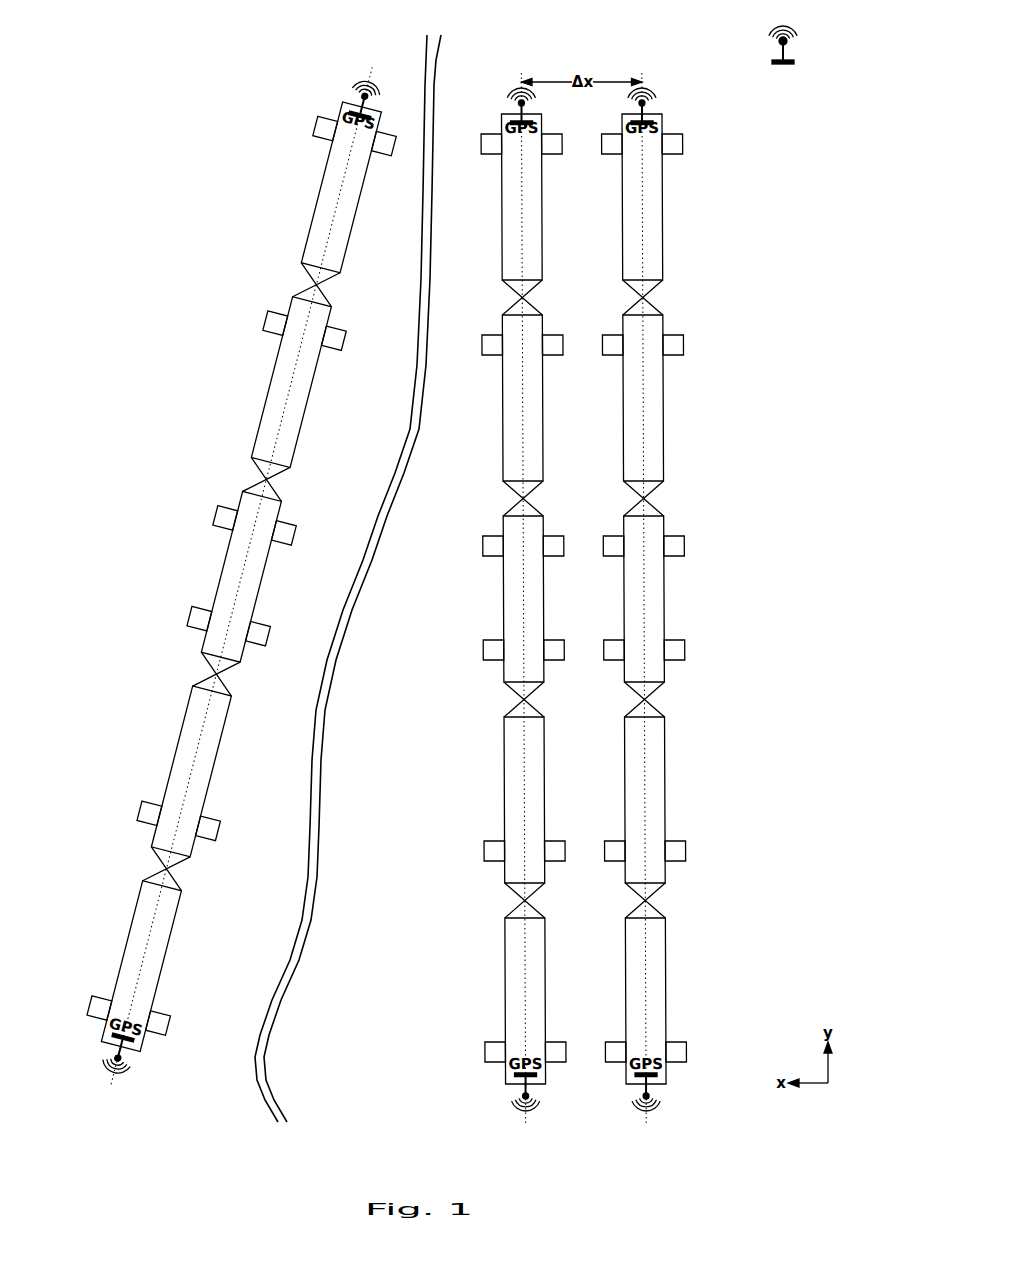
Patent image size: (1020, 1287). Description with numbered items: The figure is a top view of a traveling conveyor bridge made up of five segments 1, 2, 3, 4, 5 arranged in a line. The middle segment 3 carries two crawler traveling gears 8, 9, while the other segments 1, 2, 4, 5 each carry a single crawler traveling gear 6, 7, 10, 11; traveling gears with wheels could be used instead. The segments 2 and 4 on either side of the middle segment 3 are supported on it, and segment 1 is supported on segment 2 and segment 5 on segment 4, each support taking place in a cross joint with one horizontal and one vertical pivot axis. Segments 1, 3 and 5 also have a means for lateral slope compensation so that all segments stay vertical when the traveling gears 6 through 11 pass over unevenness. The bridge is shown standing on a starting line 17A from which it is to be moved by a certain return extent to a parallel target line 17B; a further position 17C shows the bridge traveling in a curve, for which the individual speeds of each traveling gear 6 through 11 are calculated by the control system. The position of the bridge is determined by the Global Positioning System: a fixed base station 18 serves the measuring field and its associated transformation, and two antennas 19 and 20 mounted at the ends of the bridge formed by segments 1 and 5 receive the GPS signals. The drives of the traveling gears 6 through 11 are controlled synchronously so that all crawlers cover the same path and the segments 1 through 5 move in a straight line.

The segment 1 is at (658, 214).
The segment 2 is at (658, 415).
The middle segment 3 is at (659, 616).
The segment 4 is at (661, 817).
The segment 5 is at (661, 1001).
The crawler traveling gear 6 is at (656, 127).
The crawler traveling gear 7 is at (658, 329).
The crawler traveling gear 8 is at (659, 530).
The crawler traveling gear 9 is at (659, 632).
The crawler traveling gear 10 is at (665, 834).
The crawler traveling gear 11 is at (667, 1035).
The starting line 17A is at (665, 598).
The target line 17B is at (535, 598).
The curve travel position 17C is at (282, 422).
The fixed base station 18 is at (787, 58).
The antenna 19 is at (658, 105).
The antenna 20 is at (663, 1083).